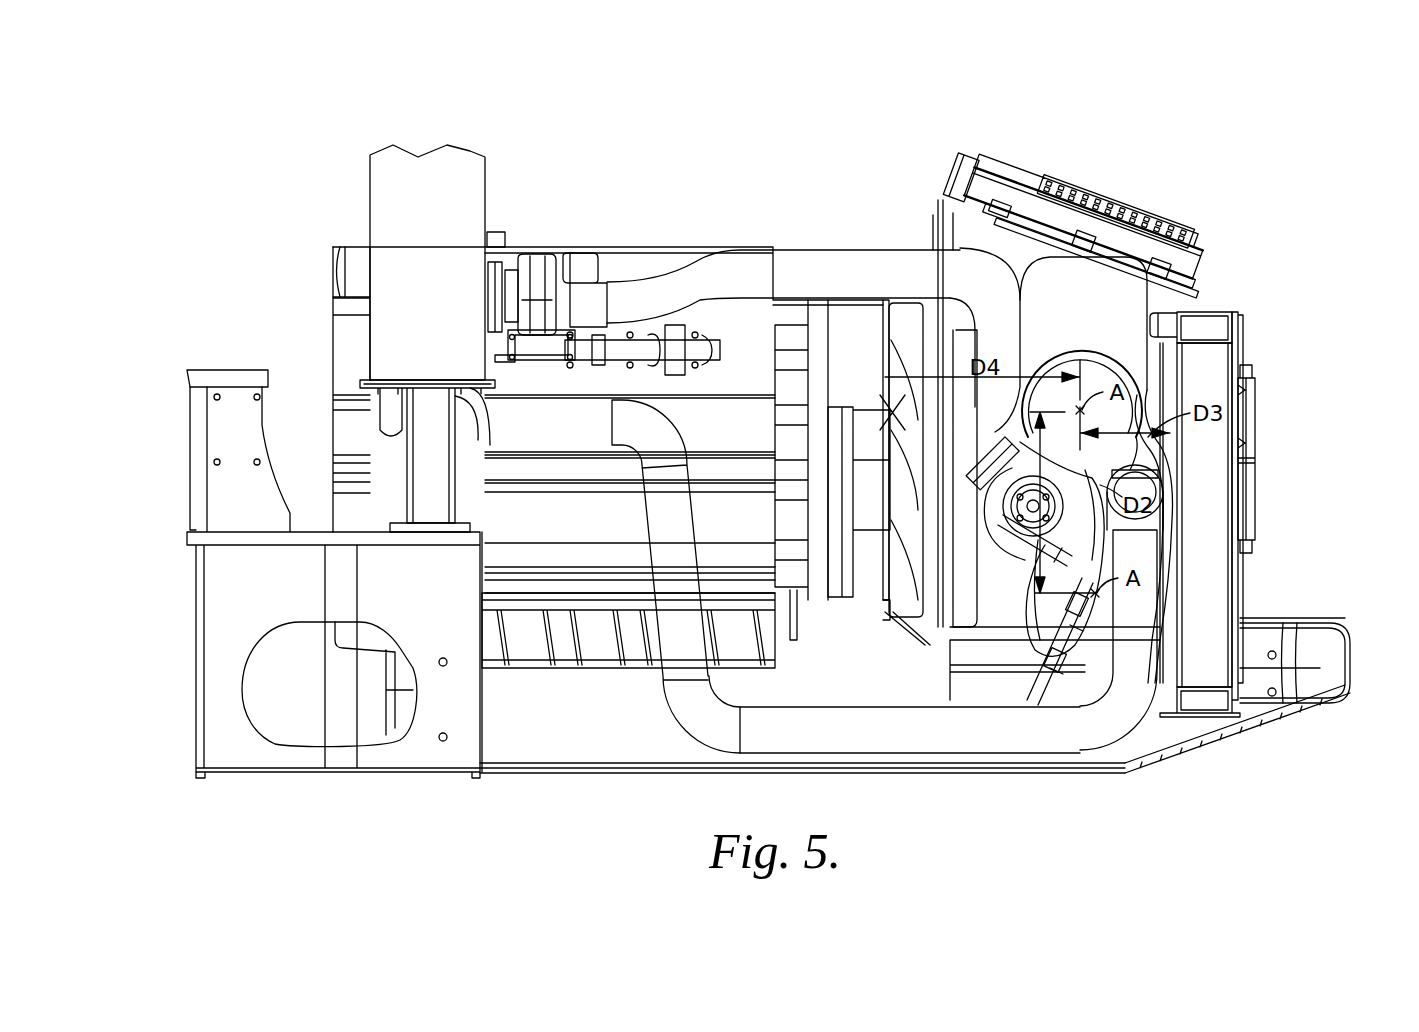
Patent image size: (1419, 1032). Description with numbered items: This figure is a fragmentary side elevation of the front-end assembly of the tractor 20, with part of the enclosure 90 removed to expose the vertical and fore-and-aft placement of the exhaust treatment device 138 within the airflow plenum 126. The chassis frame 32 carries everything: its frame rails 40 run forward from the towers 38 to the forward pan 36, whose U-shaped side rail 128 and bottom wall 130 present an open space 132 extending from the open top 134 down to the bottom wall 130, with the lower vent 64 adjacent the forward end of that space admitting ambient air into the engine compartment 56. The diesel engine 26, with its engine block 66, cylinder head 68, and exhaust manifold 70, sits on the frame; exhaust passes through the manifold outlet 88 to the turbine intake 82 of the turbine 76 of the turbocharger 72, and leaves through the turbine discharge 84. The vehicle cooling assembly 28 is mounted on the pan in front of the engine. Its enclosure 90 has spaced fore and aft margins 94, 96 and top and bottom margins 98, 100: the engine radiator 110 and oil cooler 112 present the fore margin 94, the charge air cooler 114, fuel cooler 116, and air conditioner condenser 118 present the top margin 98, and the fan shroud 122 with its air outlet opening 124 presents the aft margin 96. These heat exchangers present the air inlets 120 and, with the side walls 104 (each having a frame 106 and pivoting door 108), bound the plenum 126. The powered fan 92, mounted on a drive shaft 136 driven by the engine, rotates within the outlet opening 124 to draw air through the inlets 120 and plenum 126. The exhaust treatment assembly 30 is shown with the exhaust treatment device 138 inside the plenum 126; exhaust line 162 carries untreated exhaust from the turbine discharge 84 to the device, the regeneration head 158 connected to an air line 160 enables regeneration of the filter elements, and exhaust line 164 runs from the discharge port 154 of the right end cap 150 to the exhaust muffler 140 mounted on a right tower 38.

The tractor 20 is at (1240, 122).
The diesel engine 26 is at (518, 562).
The vehicle cooling assembly 28 is at (1190, 248).
The exhaust treatment assembly 30 is at (1143, 395).
The chassis frame 32 is at (523, 753).
The forward pan 36 is at (1040, 770).
The towers 38 is at (228, 580).
The frame rails 40 is at (782, 757).
The engine compartment 56 is at (738, 150).
The lower vent 64 is at (1263, 727).
The engine block 66 is at (508, 522).
The cylinder head 68 is at (352, 332).
The exhaust manifold 70 is at (697, 348).
The turbocharger 72 is at (520, 293).
The turbine 76 is at (543, 272).
The turbine intake 82 is at (540, 337).
The turbine discharge 84 is at (567, 298).
The manifold outlet 88 is at (522, 350).
The enclosure 90 is at (1232, 500).
The powered fan 92 is at (893, 583).
The fore margin 94 is at (1267, 501).
The aft margin 96 is at (857, 205).
The top margin 98 is at (1111, 194).
The bottom margin 100 is at (1198, 765).
The side walls 104 is at (1180, 308).
The frame 106 is at (930, 205).
The door 108 is at (1127, 302).
The engine radiator 110 is at (1235, 593).
The oil cooler 112 is at (1255, 423).
The charge air cooler 114 is at (1133, 253).
The fuel cooler 116 is at (953, 220).
The air conditioner condenser 118 is at (1123, 208).
The air inlets 120 is at (1087, 170).
The fan shroud 122 is at (955, 226).
The air outlet opening 124 is at (882, 308).
The airflow plenum 126 is at (1033, 267).
The side rail 128 is at (1347, 632).
The bottom wall 130 is at (1123, 772).
The open space 132 is at (1282, 705).
The open top 134 is at (1303, 623).
The drive shaft 136 is at (878, 427).
The exhaust treatment device 138 is at (1100, 553).
The exhaust muffler 140 is at (383, 172).
The right end cap 150 is at (1095, 365).
The discharge port 154 is at (1143, 460).
The regeneration head 158 is at (1015, 507).
The air line 160 is at (1027, 695).
The exhaust line 162 is at (765, 262).
The exhaust line 164 is at (687, 710).